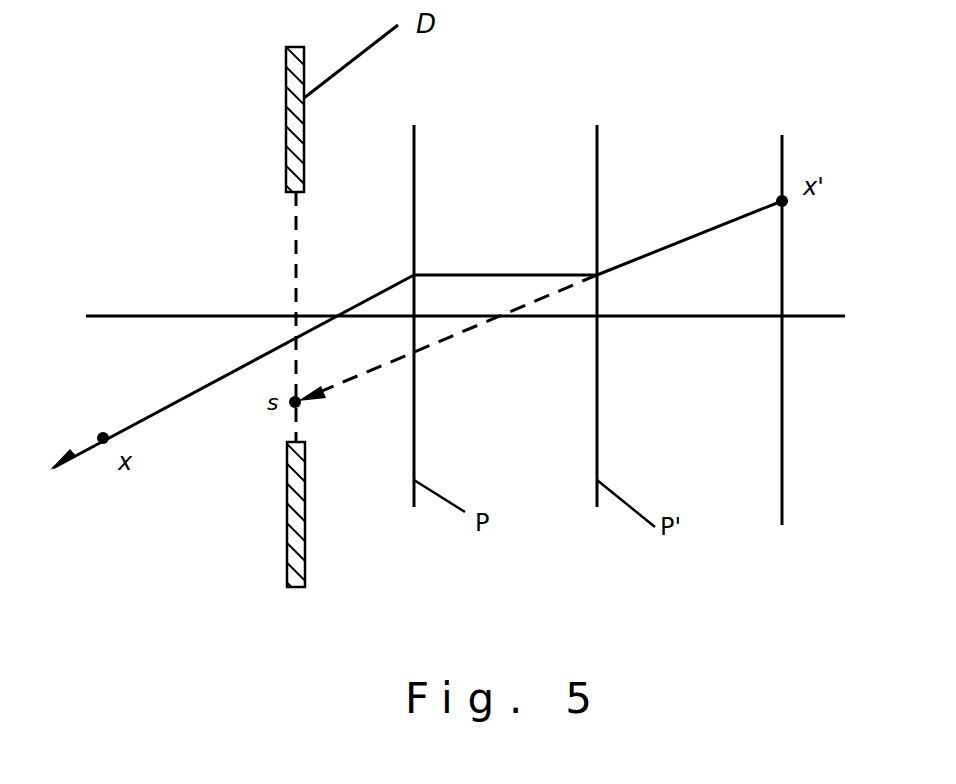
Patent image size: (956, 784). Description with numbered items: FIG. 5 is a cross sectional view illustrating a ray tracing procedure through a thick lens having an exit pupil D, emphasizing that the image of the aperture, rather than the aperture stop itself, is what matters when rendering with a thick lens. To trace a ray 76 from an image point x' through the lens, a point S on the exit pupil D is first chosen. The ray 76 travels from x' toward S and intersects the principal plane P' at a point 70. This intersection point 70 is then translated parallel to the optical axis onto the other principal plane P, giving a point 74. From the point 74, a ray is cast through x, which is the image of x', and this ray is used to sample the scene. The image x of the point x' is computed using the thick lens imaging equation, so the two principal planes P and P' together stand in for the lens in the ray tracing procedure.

The point of intersection 70 is at (597, 275).
The point on P 74 is at (414, 275).
The ray 76 is at (687, 243).